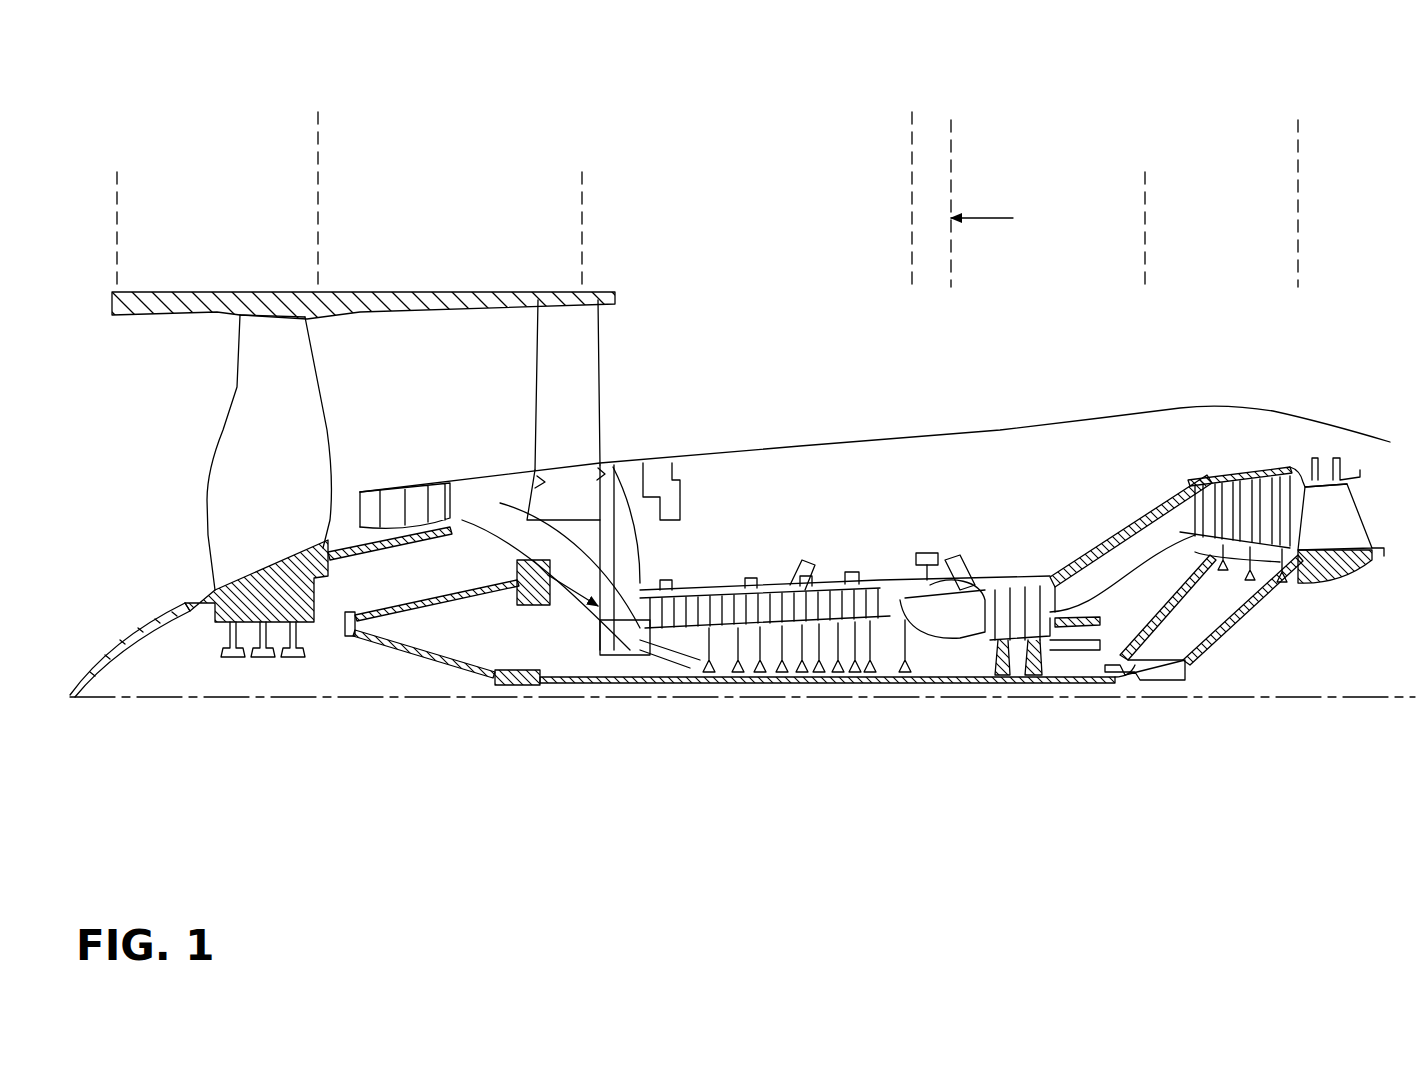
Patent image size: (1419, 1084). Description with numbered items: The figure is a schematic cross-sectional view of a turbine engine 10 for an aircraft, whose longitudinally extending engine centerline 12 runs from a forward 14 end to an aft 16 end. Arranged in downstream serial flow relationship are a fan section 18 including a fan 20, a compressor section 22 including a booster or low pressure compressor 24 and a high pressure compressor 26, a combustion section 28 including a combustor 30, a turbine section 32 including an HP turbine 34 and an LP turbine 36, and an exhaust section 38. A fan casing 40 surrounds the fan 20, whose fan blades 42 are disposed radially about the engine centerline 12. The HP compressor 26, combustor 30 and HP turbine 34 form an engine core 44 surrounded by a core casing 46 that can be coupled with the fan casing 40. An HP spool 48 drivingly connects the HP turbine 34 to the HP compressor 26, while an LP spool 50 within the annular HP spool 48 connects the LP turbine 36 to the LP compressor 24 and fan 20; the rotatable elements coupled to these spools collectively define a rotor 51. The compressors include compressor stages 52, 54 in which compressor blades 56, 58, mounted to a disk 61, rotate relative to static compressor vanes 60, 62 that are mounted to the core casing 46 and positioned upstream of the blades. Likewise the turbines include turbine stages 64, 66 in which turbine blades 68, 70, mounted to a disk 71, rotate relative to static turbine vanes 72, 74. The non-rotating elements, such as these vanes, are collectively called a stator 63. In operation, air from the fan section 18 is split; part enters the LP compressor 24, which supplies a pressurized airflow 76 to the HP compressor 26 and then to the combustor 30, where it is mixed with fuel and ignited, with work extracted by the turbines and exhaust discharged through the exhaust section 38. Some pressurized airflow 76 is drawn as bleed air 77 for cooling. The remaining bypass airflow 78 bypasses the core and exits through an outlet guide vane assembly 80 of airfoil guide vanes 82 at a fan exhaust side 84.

The turbine engine 10 is at (1312, 218).
The engine centerline 12 is at (196, 700).
The forward 14 is at (148, 425).
The aft 16 is at (1400, 522).
The fan section 18 is at (117, 187).
The fan 20 is at (190, 543).
The compressor section 22 is at (318, 112).
The low pressure compressor 24 is at (318, 187).
The high pressure compressor 26 is at (582, 187).
The combustion section 28 is at (912, 218).
The combustor 30 is at (960, 565).
The turbine section 32 is at (951, 120).
The HP turbine 34 is at (951, 187).
The LP turbine 36 is at (1145, 187).
The exhaust section 38 is at (1360, 497).
The fan casing 40 is at (350, 290).
The fan blades 42 is at (290, 355).
The engine core 44 is at (876, 468).
The core casing 46 is at (1135, 505).
The HP spool 48 is at (918, 650).
The LP spool 50 is at (515, 685).
The rotor 51 is at (775, 690).
The compressor stages 52 is at (315, 404).
The compressor stages 54 is at (742, 560).
The compressor blades 56 is at (408, 487).
The compressor blades 58 is at (665, 600).
The static compressor vanes 60 is at (370, 492).
The disk 61 is at (420, 535).
The static compressor vanes 62 is at (640, 575).
The stator 63 is at (647, 655).
The turbine stages 64 is at (1005, 515).
The turbine stages 66 is at (1225, 405).
The turbine blades 68 is at (1012, 585).
The turbine blades 70 is at (1285, 478).
The disk 71 is at (1205, 562).
The static turbine vanes 72 is at (1012, 532).
The static turbine vanes 74 is at (1262, 480).
The pressurized airflow 76 is at (540, 606).
The bleed air 77 is at (775, 582).
The bypass airflow 78 is at (640, 367).
The outlet guide vane assembly 80 is at (612, 430).
The airfoil guide vanes 82 is at (545, 405).
The fan exhaust side 84 is at (617, 343).